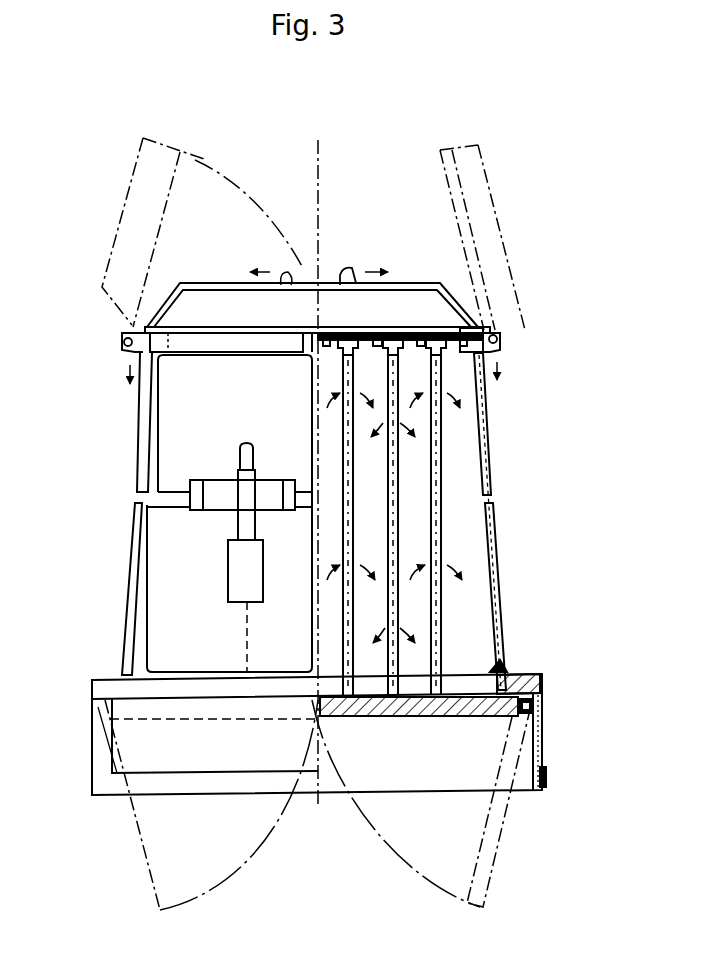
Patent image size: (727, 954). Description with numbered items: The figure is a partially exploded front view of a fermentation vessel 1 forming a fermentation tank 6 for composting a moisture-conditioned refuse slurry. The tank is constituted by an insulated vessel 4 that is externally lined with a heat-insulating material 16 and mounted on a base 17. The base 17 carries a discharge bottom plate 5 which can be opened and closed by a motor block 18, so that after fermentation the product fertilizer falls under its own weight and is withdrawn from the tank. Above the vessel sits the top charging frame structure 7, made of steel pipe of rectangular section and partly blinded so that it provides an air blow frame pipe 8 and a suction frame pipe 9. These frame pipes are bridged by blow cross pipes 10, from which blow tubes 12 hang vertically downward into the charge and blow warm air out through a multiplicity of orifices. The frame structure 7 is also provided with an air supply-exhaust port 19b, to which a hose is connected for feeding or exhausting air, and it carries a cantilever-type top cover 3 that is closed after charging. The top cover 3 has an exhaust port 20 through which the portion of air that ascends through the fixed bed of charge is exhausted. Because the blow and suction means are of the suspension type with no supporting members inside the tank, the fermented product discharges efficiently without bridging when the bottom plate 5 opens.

The heating rods 1 is at (442, 426).
The top cover 3 is at (400, 283).
The insulated vessel 4 is at (490, 497).
The discharge bottom plate 5 is at (500, 668).
The fermentation tank 6 is at (126, 466).
The top charging frame structure 7 is at (232, 325).
The air blow frame pipe 8 is at (291, 333).
The suction frame pipe 9 is at (455, 318).
The blow cross pipes 10 is at (410, 323).
The blow tubes 12 is at (440, 543).
The heat-insulating material 16 is at (500, 597).
The base 17 is at (543, 745).
The motor block 18 is at (213, 502).
The air supply-exhaust port 19b is at (124, 358).
The exhaust port 20 is at (350, 263).